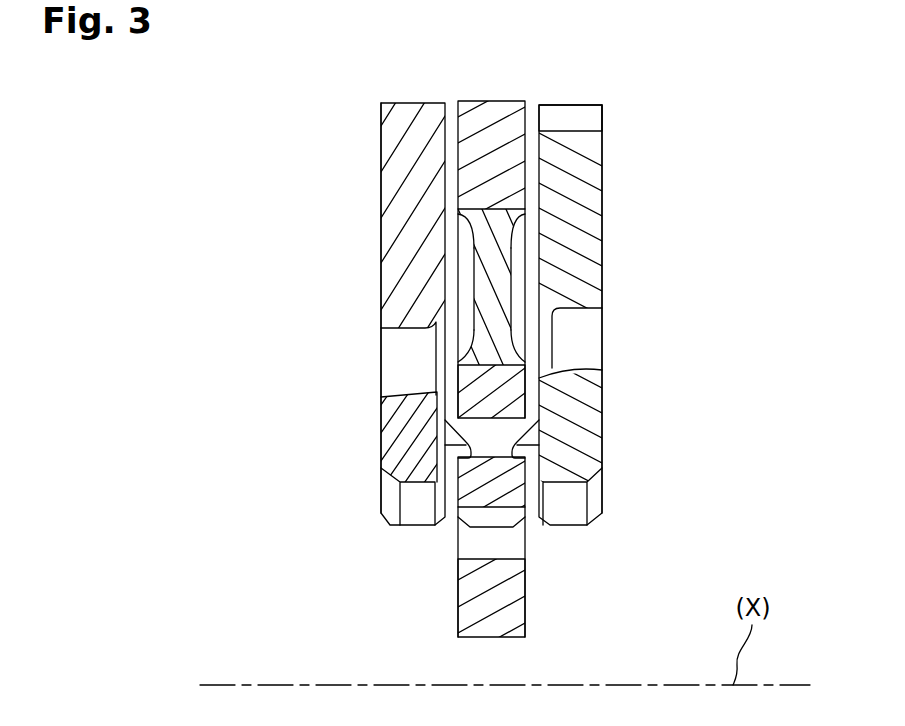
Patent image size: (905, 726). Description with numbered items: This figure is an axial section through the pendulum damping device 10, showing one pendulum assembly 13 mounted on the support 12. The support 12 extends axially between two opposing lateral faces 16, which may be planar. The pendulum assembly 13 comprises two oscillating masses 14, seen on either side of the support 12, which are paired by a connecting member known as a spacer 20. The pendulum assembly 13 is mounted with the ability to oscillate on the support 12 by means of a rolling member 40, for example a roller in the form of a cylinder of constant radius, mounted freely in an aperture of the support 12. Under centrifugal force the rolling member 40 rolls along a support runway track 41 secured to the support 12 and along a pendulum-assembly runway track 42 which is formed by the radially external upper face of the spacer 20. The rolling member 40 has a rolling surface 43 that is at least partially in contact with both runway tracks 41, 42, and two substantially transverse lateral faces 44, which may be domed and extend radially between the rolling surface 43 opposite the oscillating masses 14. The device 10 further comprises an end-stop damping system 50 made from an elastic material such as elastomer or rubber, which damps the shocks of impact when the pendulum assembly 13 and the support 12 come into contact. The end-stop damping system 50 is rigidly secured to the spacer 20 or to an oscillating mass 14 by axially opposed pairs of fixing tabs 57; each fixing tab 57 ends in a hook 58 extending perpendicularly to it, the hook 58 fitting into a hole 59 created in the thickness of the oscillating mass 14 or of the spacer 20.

The pendulum damping device 10 is at (358, 134).
The support 12 is at (516, 590).
The pendulum assembly 13 is at (383, 102).
The oscillating mass 14 is at (380, 159).
The lateral face 16 is at (528, 120).
The spacer 20 is at (527, 496).
The rolling member 40 is at (490, 280).
The support runway track 41 is at (470, 233).
The pendulum-assembly runway track 42 is at (505, 338).
The rolling surface 43 is at (483, 210).
The lateral face of the rolling member 44 is at (470, 273).
The end-stop damping system 50 is at (478, 519).
The fixing tab 57 is at (541, 446).
The hook 58 is at (542, 392).
The hole 59 is at (448, 423).